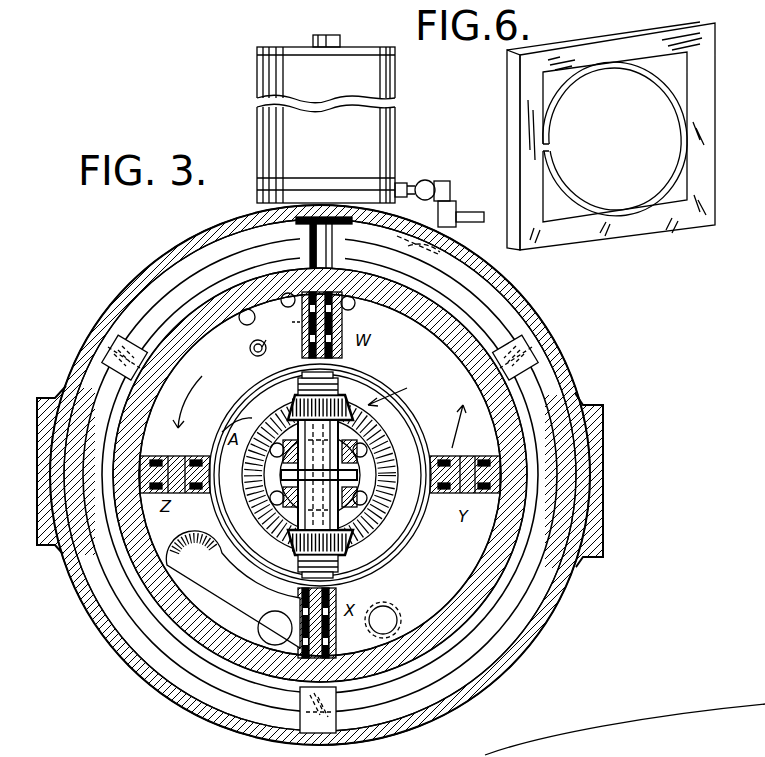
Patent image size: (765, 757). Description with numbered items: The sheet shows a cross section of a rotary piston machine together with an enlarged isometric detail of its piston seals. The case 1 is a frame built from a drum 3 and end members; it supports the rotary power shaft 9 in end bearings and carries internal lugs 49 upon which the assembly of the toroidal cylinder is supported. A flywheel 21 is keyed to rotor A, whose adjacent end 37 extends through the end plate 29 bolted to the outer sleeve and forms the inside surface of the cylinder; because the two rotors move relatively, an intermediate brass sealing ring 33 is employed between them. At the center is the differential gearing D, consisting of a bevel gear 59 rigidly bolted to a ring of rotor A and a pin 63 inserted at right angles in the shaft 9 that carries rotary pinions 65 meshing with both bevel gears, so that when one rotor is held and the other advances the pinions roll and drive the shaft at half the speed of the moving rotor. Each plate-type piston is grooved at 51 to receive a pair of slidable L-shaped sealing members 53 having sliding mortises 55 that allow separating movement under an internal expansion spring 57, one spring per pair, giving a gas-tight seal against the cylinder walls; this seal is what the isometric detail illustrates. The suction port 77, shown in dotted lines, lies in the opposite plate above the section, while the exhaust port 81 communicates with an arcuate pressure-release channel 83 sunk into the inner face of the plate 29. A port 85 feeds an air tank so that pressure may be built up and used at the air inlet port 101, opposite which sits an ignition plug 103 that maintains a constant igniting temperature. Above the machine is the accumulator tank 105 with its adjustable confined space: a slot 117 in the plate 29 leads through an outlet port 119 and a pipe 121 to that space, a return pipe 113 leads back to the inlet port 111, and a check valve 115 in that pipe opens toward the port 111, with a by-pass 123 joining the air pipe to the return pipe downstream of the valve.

In FIG. 3, the case 1 is at (142, 263).
In FIG. 3, the drum 3 is at (73, 598).
In FIG. 3, the rotary power shaft 9 is at (368, 496).
In FIG. 3, the flywheel 21 is at (152, 308).
In FIG. 3, the end plate 29 is at (152, 527).
In FIG. 3, the sealing ring 33 is at (256, 388).
In FIG. 3, the rotor end 37 is at (232, 405).
In FIG. 3, the internal lugs 49 is at (108, 346).
In FIG. 3, the piston groove 51 is at (448, 510).
In FIG. 3, the sealing member 53 is at (370, 366).
In FIG. 6, the sealing member 53 is at (640, 45).
In FIG. 6, the sliding mortise 55 is at (528, 62).
In FIG. 3, the expansion spring 57 is at (342, 344).
In FIG. 6, the expansion spring 57 is at (556, 186).
In FIG. 3, the bevel gear 59 is at (368, 450).
In FIG. 3, the pin 63 is at (320, 475).
In FIG. 3, the rotary pinion 65 is at (294, 407).
In FIG. 3, the suction port 77 is at (398, 613).
In FIG. 3, the exhaust port 81 is at (260, 622).
In FIG. 3, the pressure-release channel 83 is at (178, 578).
In FIG. 3, the port 85 is at (342, 318).
In FIG. 3, the air inlet port 101 is at (244, 325).
In FIG. 3, the ignition plug 103 is at (250, 349).
In FIG. 3, the accumulator tank 105 is at (268, 68).
In FIG. 3, the inlet port 111 is at (285, 293).
In FIG. 3, the return pipe 113 is at (406, 238).
In FIG. 3, the check valve 115 is at (430, 179).
In FIG. 3, the slot 117 is at (281, 345).
In FIG. 3, the outlet port 119 is at (282, 322).
In FIG. 3, the pipe 121 is at (310, 240).
In FIG. 3, the by-pass 123 is at (472, 212).
In FIG. 3, the differential gearing D is at (395, 390).